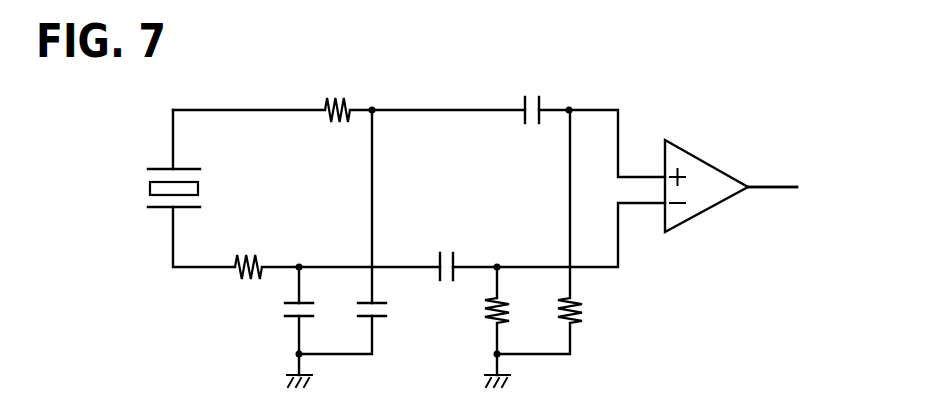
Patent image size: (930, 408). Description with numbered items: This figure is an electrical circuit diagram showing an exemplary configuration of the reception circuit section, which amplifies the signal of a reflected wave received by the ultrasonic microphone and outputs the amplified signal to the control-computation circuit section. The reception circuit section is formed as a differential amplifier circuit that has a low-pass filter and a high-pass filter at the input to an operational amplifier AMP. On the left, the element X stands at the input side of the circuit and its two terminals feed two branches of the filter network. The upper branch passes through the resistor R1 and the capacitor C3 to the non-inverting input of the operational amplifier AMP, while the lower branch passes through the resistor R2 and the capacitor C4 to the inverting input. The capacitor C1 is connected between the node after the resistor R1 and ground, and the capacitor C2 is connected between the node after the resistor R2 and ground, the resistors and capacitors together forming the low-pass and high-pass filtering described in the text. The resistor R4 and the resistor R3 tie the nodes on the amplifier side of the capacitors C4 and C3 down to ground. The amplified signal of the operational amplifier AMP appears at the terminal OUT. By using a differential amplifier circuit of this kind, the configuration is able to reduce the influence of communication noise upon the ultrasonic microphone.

The crystal resonator X is at (162, 188).
The resistor R1 is at (337, 96).
The resistor R2 is at (248, 252).
The resistor R3 is at (554, 310).
The resistor R4 is at (480, 310).
The capacitor C1 is at (356, 307).
The capacitor C2 is at (282, 307).
The capacitor C3 is at (529, 95).
The capacitor C4 is at (444, 253).
The operational amplifier AMP is at (699, 174).
The output terminal OUT is at (792, 187).